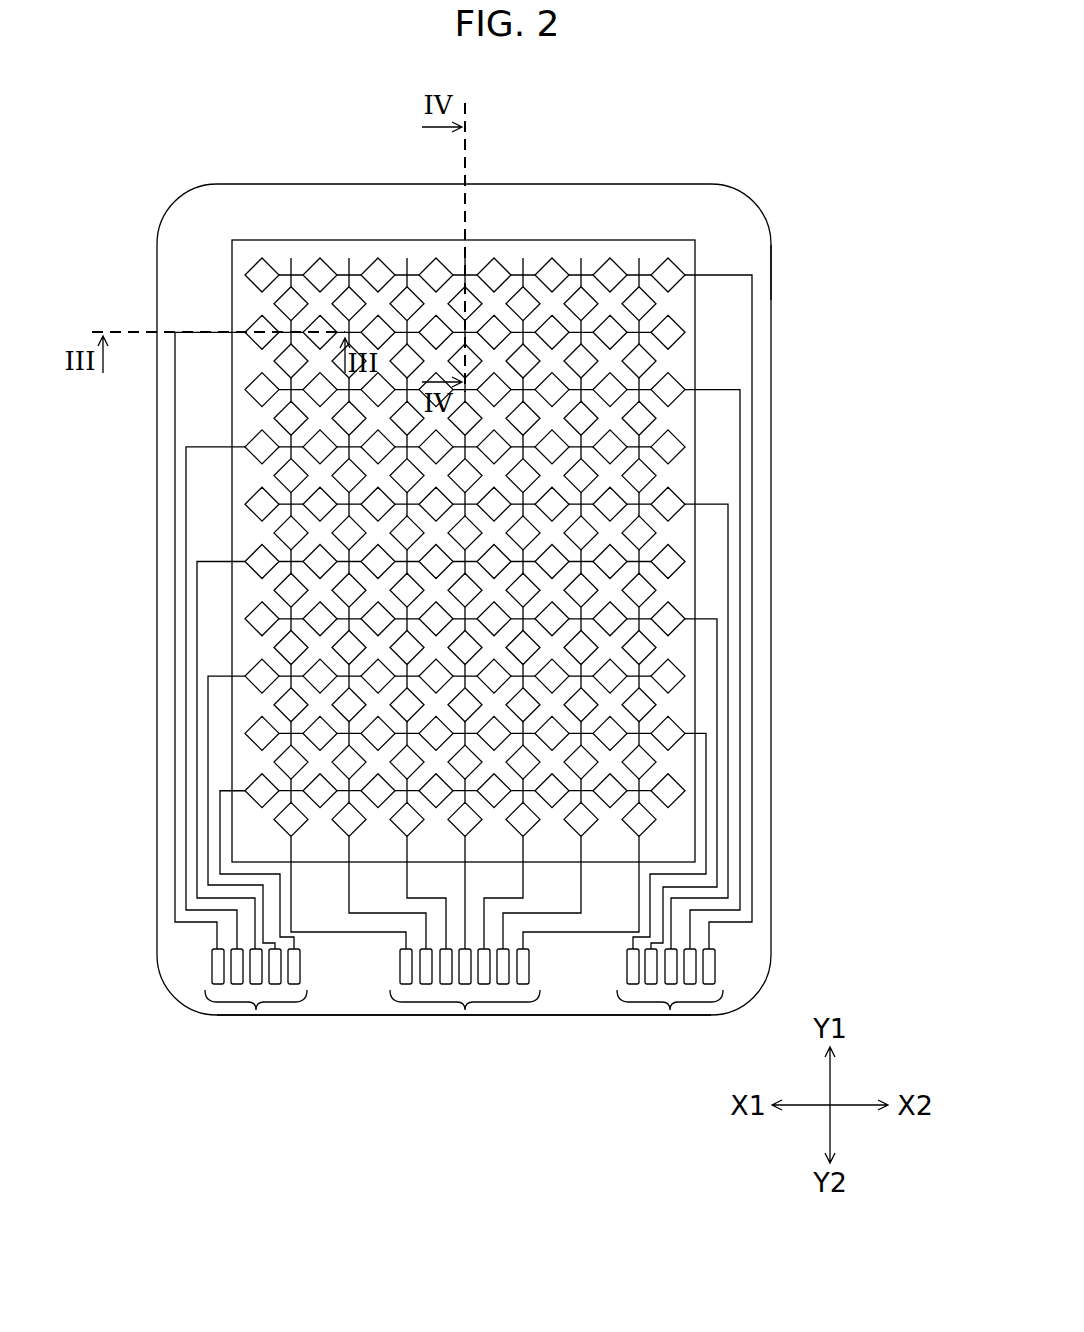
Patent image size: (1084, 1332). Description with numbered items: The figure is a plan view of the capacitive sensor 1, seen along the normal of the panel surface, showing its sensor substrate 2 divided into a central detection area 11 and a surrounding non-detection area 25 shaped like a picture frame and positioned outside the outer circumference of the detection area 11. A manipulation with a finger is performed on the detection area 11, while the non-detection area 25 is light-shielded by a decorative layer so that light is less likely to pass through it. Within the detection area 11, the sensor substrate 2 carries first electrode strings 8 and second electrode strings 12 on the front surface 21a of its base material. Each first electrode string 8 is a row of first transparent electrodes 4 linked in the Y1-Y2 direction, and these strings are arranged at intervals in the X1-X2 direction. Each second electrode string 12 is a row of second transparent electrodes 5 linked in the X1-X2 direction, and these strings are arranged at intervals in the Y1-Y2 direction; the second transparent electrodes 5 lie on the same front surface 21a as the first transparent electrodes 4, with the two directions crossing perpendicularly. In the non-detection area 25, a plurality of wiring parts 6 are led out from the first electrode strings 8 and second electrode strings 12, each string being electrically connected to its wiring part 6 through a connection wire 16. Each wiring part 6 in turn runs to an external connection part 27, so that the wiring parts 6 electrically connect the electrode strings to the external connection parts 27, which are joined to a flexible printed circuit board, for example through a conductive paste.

The capacitive sensor 1 is at (488, 597).
The sensor substrate 2 is at (708, 184).
The front surface 21a is at (753, 258).
The first transparent electrode 4 is at (476, 479).
The second transparent electrode 5 is at (548, 268).
The wiring part 6 is at (175, 410).
The first electrode string 8 is at (465, 465).
The detection area 11 is at (683, 482).
The second electrode string 12 is at (364, 258).
The connection wire 16 is at (238, 793).
The non-detection area 25 is at (585, 976).
The external connection part 27 is at (464, 998).